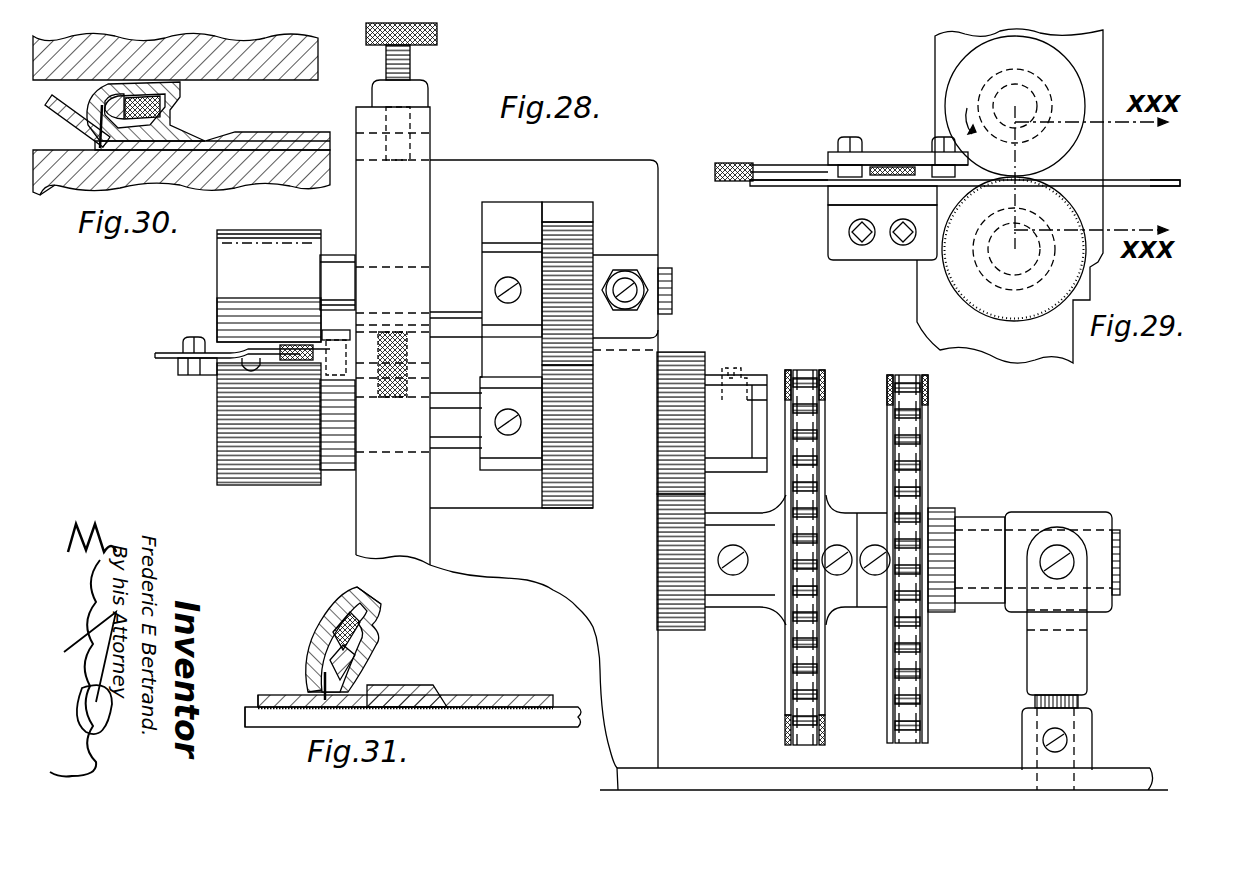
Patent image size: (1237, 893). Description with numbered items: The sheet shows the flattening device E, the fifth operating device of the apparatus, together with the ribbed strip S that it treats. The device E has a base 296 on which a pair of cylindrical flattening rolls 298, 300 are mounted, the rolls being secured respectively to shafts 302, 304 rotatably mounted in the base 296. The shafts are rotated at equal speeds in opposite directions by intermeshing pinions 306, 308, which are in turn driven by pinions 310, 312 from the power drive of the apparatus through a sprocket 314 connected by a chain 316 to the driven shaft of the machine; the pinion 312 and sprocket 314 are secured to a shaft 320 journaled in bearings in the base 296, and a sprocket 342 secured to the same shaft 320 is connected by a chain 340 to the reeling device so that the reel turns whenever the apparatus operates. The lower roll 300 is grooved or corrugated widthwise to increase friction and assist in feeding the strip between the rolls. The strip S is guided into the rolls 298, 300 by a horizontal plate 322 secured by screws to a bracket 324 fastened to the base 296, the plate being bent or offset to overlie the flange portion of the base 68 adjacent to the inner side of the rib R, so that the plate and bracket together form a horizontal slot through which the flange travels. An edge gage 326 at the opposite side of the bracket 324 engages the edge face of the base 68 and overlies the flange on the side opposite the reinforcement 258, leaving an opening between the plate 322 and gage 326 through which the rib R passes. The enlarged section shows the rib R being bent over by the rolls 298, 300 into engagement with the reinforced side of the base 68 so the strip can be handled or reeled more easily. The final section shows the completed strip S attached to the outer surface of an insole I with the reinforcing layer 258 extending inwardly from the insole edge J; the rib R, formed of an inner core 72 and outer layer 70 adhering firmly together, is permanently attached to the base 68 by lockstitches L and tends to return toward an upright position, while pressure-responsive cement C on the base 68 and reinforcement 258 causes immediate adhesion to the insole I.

In FIG. 28, the base 296 is at (635, 715).
In FIG. 29, the base 296 is at (1037, 345).
In FIG. 28, the flattening roll 298 is at (303, 241).
In FIG. 29, the flattening roll 298 is at (1083, 75).
In FIG. 30, the flattening roll 298 is at (303, 55).
In FIG. 28, the flattening roll 300 is at (233, 427).
In FIG. 29, the flattening roll 300 is at (953, 283).
In FIG. 30, the flattening roll 300 is at (237, 173).
In FIG. 28, the shaft 302 is at (676, 292).
In FIG. 29, the shaft 302 is at (993, 97).
In FIG. 28, the shaft 304 is at (455, 433).
In FIG. 29, the shaft 304 is at (985, 252).
In FIG. 28, the pinion 306 is at (578, 262).
In FIG. 28, the pinion 308 is at (568, 462).
In FIG. 28, the pinion 310 is at (680, 356).
In FIG. 28, the pinion 312 is at (672, 595).
In FIG. 28, the sprocket 314 is at (908, 483).
In FIG. 28, the chain 316 is at (887, 390).
In FIG. 28, the shaft 320 is at (1120, 550).
In FIG. 28, the horizontal plate 322 is at (160, 352).
In FIG. 29, the horizontal plate 322 is at (792, 182).
In FIG. 28, the bracket 324 is at (177, 372).
In FIG. 29, the bracket 324 is at (843, 248).
In FIG. 28, the edge gage 326 is at (348, 342).
In FIG. 29, the edge gage 326 is at (888, 158).
In FIG. 28, the chain 340 is at (825, 722).
In FIG. 28, the sprocket 342 is at (802, 675).
In FIG. 28, the reinforcing layer 258 is at (244, 352).
In FIG. 30, the reinforcing layer 258 is at (277, 143).
In FIG. 31, the reinforcing layer 258 is at (500, 703).
In FIG. 30, the base 68 is at (77, 127).
In FIG. 31, the base 68 is at (263, 695).
In FIG. 30, the outer layer 70 is at (185, 85).
In FIG. 31, the outer layer 70 is at (328, 628).
In FIG. 30, the inner layer or core 72 is at (108, 87).
In FIG. 31, the inner layer or core 72 is at (363, 642).
In FIG. 29, the ribbed strip S is at (745, 160).
In FIG. 31, the ribbed strip S is at (363, 597).
In FIG. 28, the flattening device E is at (450, 118).
In FIG. 29, the flattening device E is at (1155, 212).
In FIG. 30, the rib R is at (200, 98).
In FIG. 31, the rib R is at (343, 612).
In FIG. 30, the lockstitches L is at (44, 209).
In FIG. 31, the lockstitches L is at (320, 686).
In FIG. 31, the edge J is at (238, 712).
In FIG. 31, the pressure-responsive cement C is at (297, 710).
In FIG. 31, the insole I is at (502, 728).